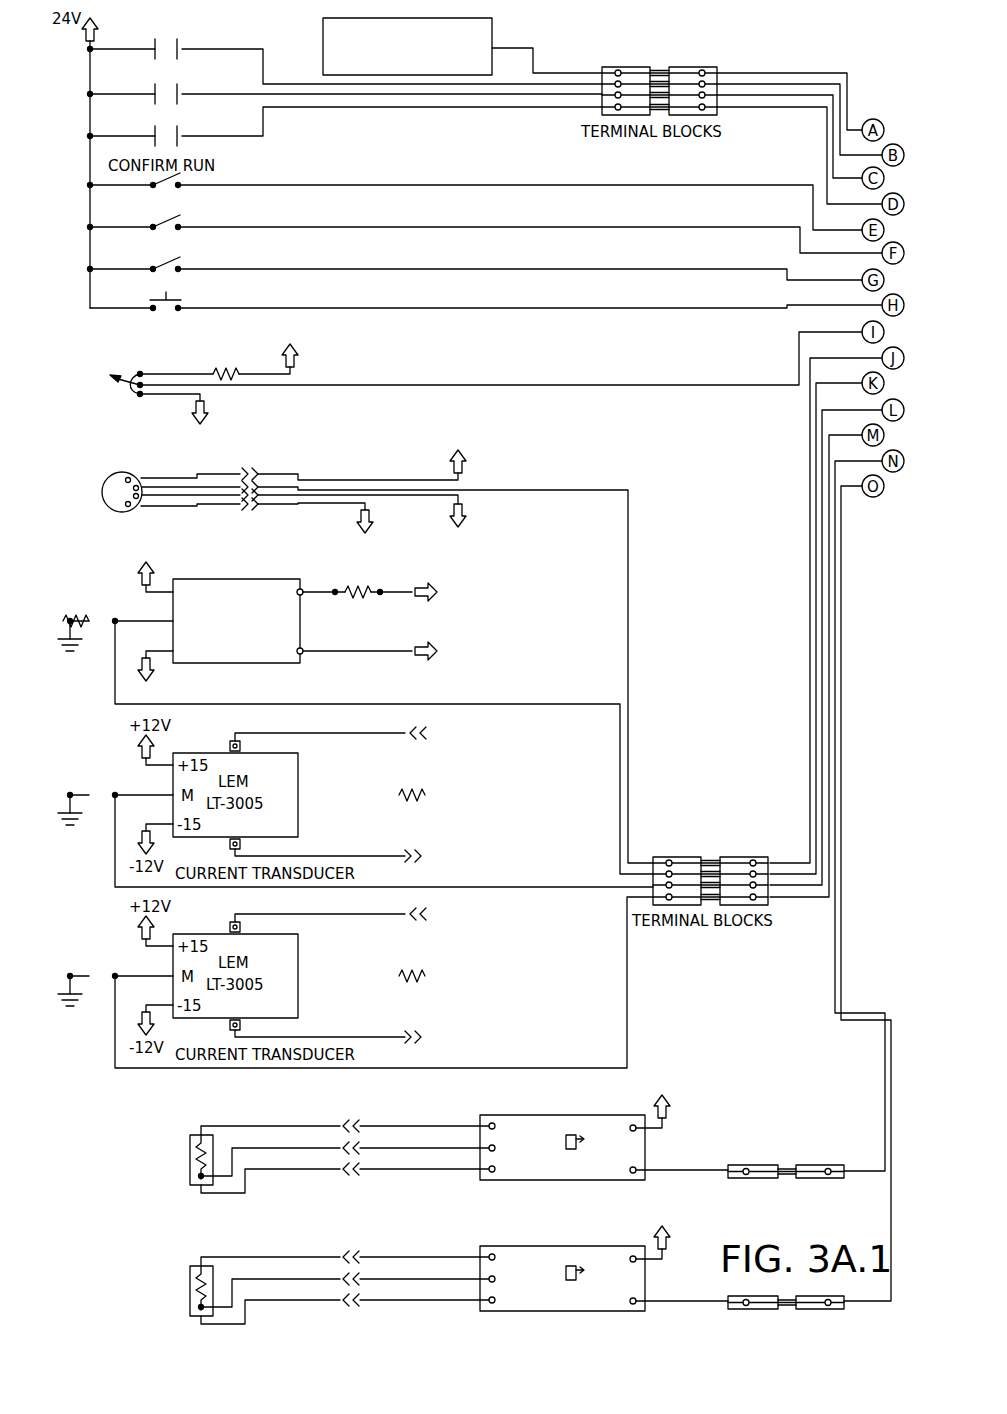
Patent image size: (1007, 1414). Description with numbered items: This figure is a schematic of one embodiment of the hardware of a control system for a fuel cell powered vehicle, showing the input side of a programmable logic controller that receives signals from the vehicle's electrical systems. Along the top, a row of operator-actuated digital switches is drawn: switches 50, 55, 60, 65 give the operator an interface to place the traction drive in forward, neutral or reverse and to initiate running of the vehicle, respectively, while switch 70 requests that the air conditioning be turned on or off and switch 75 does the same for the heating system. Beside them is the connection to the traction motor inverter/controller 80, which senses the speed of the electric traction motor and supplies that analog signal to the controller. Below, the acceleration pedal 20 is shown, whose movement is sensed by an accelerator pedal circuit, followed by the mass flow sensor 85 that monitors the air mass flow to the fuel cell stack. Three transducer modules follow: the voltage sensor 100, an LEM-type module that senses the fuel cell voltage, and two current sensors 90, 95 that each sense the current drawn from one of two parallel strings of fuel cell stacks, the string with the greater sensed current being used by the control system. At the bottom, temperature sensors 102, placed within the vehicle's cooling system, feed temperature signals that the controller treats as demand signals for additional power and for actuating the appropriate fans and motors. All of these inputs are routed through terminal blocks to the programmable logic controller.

The acceleration pedal 20 is at (98, 401).
The switch 50 is at (188, 44).
The switch 55 is at (190, 93).
The switch 60 is at (150, 131).
The switch 65 is at (140, 302).
The switch 70 is at (190, 222).
The switch 75 is at (192, 264).
The traction motor inverter/controller 80 is at (492, 42).
The mass flow sensor 85 is at (106, 498).
The current sensor 90 is at (298, 805).
The current sensor 95 is at (298, 986).
The voltage sensor 100 is at (300, 632).
The temperature sensors 102 is at (553, 1127).